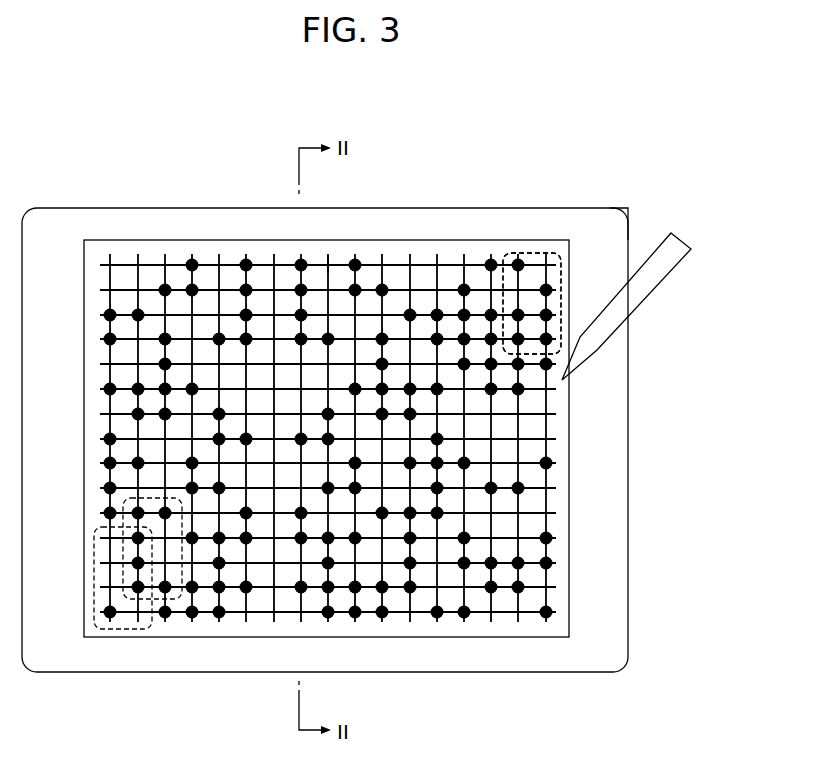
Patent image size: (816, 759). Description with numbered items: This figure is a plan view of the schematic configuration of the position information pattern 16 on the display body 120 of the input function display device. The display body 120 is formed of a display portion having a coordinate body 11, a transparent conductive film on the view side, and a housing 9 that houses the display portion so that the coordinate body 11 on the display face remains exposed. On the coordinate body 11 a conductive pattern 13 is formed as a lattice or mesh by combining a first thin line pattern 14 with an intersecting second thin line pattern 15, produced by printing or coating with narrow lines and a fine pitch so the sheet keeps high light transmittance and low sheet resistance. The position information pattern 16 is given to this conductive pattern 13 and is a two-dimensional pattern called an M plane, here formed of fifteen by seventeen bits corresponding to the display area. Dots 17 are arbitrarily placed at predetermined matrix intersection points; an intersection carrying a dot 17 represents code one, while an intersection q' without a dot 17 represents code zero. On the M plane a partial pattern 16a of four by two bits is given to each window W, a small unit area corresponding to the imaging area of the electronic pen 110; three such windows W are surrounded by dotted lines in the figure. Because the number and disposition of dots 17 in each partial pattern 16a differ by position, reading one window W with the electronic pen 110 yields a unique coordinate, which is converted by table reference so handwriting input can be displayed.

The housing 9 is at (605, 530).
The coordinate body 11 is at (580, 459).
The conductive pattern 13 is at (326, 348).
The first thin line pattern 14 is at (113, 258).
The second thin line pattern 15 is at (128, 258).
The position information pattern 16 is at (326, 348).
The partial pattern 16a is at (528, 252).
The dot 17 is at (358, 261).
The intersection q' is at (336, 220).
The window W is at (559, 253).
The electronic pen 110 is at (676, 246).
The display body 120 is at (588, 178).